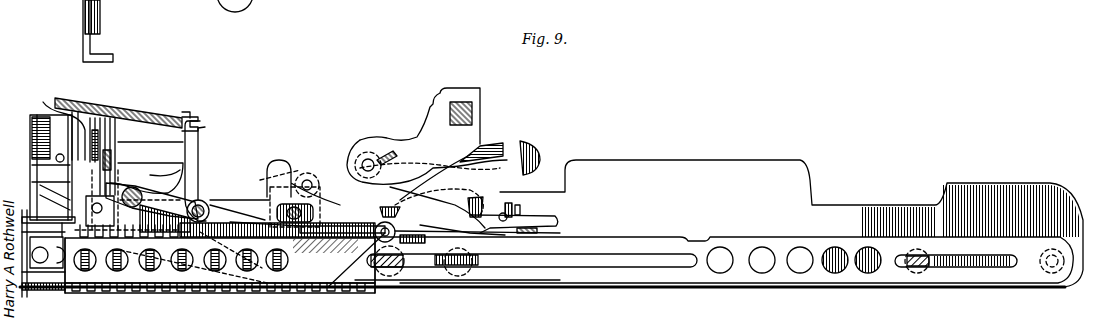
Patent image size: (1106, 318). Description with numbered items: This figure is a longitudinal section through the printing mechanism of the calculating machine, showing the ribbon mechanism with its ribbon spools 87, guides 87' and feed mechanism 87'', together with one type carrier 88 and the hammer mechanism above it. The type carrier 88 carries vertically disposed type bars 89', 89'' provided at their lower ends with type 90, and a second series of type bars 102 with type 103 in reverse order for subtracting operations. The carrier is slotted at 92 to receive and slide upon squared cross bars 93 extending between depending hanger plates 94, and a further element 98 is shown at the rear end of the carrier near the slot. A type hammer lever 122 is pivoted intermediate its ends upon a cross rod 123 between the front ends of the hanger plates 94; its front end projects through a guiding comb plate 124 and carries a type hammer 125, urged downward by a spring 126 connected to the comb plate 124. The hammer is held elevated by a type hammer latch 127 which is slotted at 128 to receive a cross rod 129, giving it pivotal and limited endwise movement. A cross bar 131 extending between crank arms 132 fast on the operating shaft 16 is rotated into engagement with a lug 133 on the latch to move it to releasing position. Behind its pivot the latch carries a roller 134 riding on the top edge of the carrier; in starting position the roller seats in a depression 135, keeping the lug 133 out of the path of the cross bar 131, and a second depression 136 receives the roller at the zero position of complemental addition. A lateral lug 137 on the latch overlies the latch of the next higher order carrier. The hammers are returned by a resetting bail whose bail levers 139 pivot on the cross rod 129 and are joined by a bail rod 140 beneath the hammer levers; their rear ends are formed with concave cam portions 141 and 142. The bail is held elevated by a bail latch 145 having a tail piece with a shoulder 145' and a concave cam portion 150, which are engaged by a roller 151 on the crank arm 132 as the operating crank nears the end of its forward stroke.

The operating shaft 16 is at (463, 106).
The ribbon spools 87 is at (48, 142).
The ribbon guides 87' is at (48, 245).
The ribbon feed mechanism 87'' is at (791, 204).
The type carrier 88 is at (660, 238).
The type bar 89' is at (81, 248).
The type bar 89'' is at (126, 107).
The type 90 is at (68, 283).
The slot 92 is at (607, 253).
The squared cross bar 93 is at (401, 268).
The hanger plate 94 is at (804, 167).
The stud 98 is at (1047, 262).
The type bar 102 is at (220, 273).
The type 103 is at (110, 292).
The type hammer lever 122 is at (199, 139).
The cross rod 123 is at (202, 207).
The guiding comb plate 124 is at (56, 110).
The type hammer 125 is at (90, 110).
The spring 126 is at (160, 118).
The type hammer latch 127 is at (291, 165).
The slot 128 is at (258, 200).
The cross rod 129 is at (313, 186).
The cross bar 131 is at (358, 158).
The crank arm 132 is at (392, 137).
The lug 133 is at (483, 205).
The roller 134 is at (347, 271).
The depression 135 is at (413, 243).
The second depression 136 is at (704, 238).
The lateral projecting lug 137 is at (515, 202).
The bail lever 139 is at (175, 195).
The bail rod 140 is at (135, 188).
The concave cam portion 141 is at (428, 186).
The concave cam portion 142 is at (477, 261).
The bail latch 145 is at (514, 236).
The shoulder 145' is at (447, 195).
The concave cam portion 150 is at (462, 218).
The roller 151 is at (360, 153).